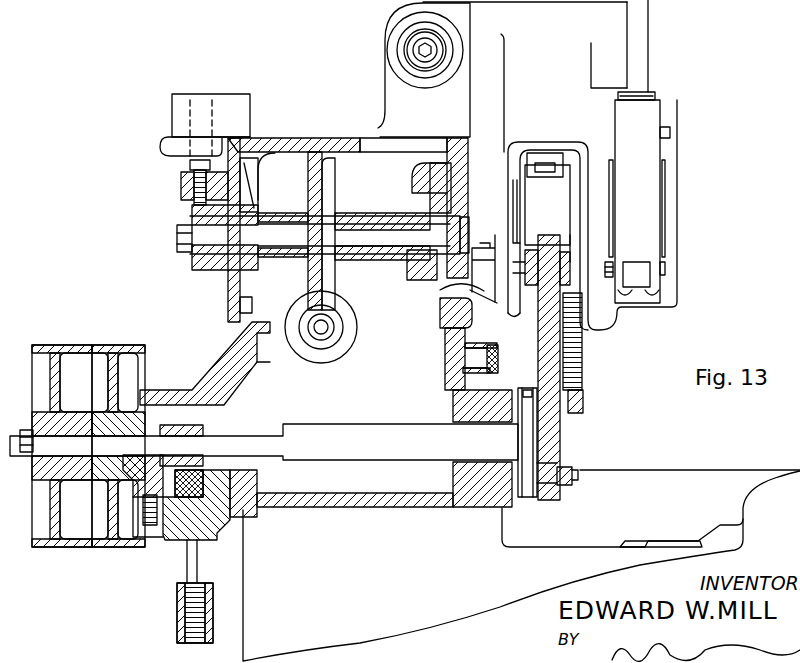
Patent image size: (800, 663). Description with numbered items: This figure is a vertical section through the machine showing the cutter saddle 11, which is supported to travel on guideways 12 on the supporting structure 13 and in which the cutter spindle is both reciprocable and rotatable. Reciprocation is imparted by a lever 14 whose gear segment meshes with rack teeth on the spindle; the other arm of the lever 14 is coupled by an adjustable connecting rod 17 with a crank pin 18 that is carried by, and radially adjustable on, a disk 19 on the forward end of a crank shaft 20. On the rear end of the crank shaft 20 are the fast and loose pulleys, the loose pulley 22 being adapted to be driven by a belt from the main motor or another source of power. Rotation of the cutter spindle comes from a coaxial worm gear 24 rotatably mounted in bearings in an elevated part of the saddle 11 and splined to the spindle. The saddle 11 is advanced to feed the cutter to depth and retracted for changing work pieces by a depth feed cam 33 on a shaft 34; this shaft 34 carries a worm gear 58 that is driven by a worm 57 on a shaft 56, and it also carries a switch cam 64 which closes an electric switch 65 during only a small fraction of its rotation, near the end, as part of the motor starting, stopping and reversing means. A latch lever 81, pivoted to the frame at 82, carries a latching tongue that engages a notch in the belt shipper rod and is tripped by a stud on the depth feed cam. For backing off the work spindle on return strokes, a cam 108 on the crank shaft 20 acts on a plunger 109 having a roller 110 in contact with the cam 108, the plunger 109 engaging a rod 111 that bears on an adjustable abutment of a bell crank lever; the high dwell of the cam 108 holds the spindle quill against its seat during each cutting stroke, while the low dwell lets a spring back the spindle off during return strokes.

The cutter saddle 11 is at (602, 137).
The guideways 12 is at (440, 306).
The supporting structure 13 is at (643, 10).
The lever 14 is at (530, 200).
The adjustable connecting rod 17 is at (550, 367).
The crank pin 18 is at (574, 475).
The disk 19 is at (524, 498).
The crank shaft 20 is at (327, 434).
The loose pulley 22 is at (60, 344).
The worm gear 24 is at (116, 345).
The depth feed cam 33 is at (457, 188).
The shaft 34 is at (383, 227).
The shaft 56 is at (330, 328).
The worm 57 is at (332, 355).
The worm gear 58 is at (335, 300).
The switch cam 64 is at (192, 208).
The electric switch 65 is at (181, 117).
The latch lever 81 is at (494, 347).
The pivot 82 is at (497, 360).
The cam 108 is at (197, 420).
The plunger 109 is at (180, 536).
The roller 110 is at (167, 534).
The rod 111 is at (185, 571).